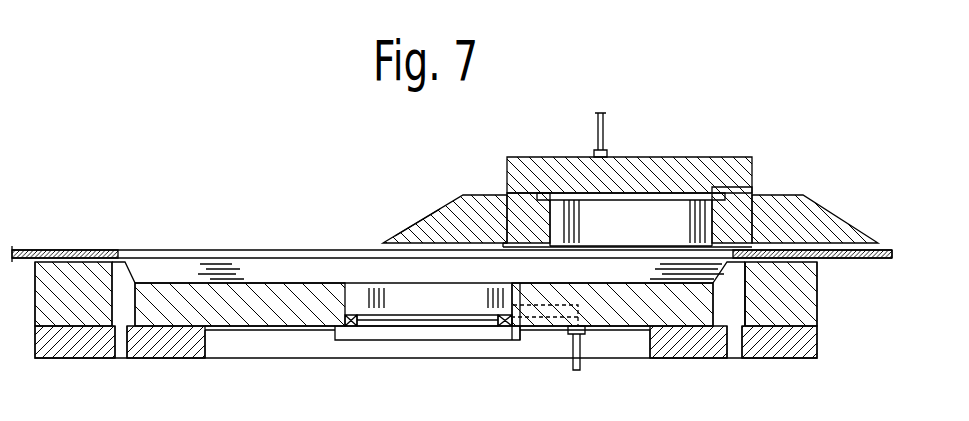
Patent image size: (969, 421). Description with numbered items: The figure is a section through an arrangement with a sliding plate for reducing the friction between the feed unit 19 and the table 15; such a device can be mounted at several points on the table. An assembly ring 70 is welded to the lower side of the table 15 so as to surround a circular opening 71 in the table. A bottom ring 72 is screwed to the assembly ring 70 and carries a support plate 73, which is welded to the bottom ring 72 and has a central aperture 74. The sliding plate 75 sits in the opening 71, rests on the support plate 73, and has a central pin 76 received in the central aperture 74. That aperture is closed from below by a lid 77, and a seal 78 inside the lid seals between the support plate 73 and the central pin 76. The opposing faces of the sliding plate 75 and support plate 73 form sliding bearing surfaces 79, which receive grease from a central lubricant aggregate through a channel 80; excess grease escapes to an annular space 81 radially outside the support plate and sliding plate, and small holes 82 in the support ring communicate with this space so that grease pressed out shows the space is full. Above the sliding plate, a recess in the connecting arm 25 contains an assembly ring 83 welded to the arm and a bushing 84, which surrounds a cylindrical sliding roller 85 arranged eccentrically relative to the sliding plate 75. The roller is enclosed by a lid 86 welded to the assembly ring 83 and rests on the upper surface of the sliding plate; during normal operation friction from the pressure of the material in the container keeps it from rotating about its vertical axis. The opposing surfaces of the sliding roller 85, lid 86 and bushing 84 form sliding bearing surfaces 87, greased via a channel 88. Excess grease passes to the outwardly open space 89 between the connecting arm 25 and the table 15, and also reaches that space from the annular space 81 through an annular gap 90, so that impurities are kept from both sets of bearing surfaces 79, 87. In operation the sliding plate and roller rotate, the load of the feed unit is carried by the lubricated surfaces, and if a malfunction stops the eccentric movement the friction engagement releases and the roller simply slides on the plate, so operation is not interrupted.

The table 15 is at (58, 250).
The feed unit 19 is at (423, 204).
The connecting arm 25 is at (407, 228).
The assembly ring 70 is at (808, 305).
The circular opening 71 is at (113, 282).
The bottom ring 72 is at (97, 358).
The support plate 73 is at (253, 332).
The central aperture 74 is at (347, 290).
The sliding plate 75 is at (187, 268).
The central pin 76 is at (432, 340).
The lid 77 is at (472, 340).
The seal 78 is at (512, 340).
The sliding bearing surfaces 79 is at (250, 268).
The channel 80 is at (550, 317).
The annular space 81 is at (108, 258).
The small holes 82 is at (121, 356).
The assembly ring 83 is at (740, 157).
The bushing 84 is at (541, 190).
The sliding roller 85 is at (638, 222).
The lid 86 is at (662, 157).
The sliding bearing surfaces 87 is at (565, 193).
The channel 88 is at (617, 193).
The outwardly open space 89 is at (478, 195).
The annular gap 90 is at (757, 288).